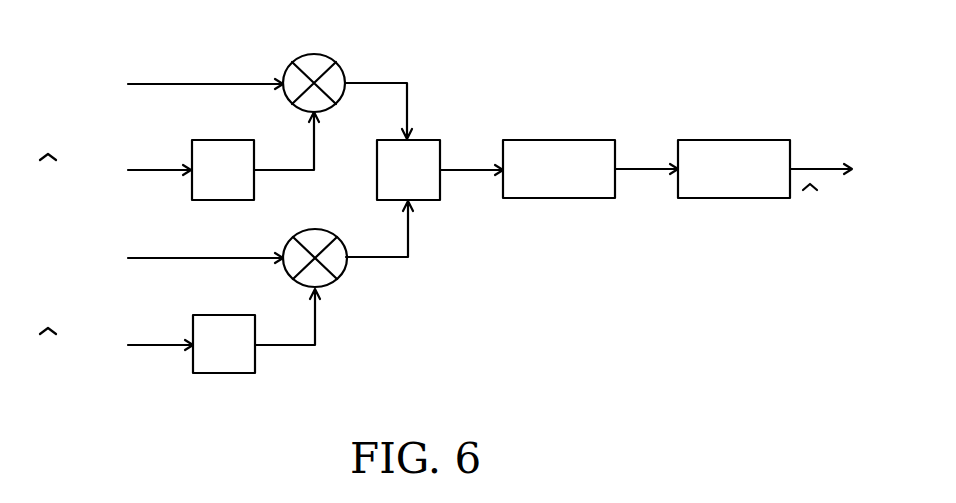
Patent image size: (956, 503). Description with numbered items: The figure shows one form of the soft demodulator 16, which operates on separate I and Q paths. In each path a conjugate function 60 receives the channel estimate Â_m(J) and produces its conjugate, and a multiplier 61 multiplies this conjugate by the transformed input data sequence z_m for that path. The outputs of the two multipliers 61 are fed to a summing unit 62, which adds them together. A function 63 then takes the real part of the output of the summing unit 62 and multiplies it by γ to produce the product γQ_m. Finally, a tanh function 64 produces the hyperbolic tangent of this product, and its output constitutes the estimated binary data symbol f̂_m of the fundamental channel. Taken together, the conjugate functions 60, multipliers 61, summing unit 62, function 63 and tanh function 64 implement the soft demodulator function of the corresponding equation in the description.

The soft demodulator 16 is at (422, 29).
The conjugate function 60 is at (198, 152).
The multiplier 61 is at (305, 62).
The summing unit 62 is at (432, 195).
The function 63 is at (518, 142).
The tanh function 64 is at (693, 142).